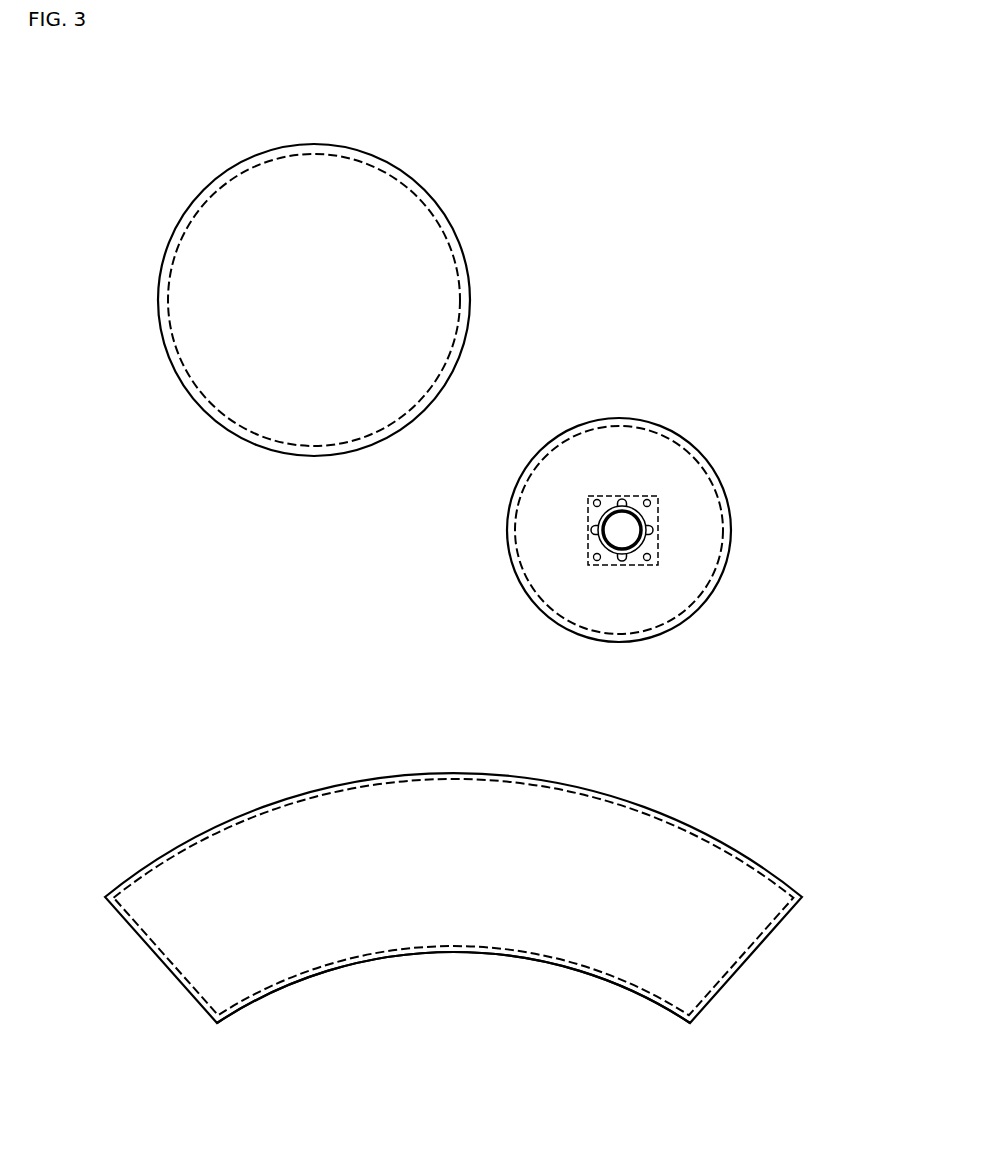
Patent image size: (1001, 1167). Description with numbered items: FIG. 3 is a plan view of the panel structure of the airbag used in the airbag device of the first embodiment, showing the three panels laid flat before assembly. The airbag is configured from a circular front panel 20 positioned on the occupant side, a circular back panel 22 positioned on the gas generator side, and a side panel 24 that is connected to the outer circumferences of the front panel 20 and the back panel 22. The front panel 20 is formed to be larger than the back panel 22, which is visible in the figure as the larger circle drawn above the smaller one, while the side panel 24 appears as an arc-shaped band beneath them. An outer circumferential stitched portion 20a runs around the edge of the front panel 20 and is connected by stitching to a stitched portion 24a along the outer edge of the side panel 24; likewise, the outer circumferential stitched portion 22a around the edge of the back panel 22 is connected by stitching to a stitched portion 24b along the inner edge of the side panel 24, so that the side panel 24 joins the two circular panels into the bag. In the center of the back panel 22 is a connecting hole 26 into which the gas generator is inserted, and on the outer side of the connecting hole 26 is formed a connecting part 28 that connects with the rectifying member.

The front panel 20 is at (455, 235).
The outer circumferential stitched portion of the front panel 20a is at (293, 442).
The back panel 22 is at (665, 631).
The outer circumferential stitched portion of the back panel 22a is at (550, 619).
The side panel 24 is at (214, 831).
The stitched portion of the side panel 24a is at (302, 806).
The stitched portion of the side panel 24b is at (567, 958).
The connecting hole 26 is at (629, 521).
The connecting part 28 is at (607, 496).